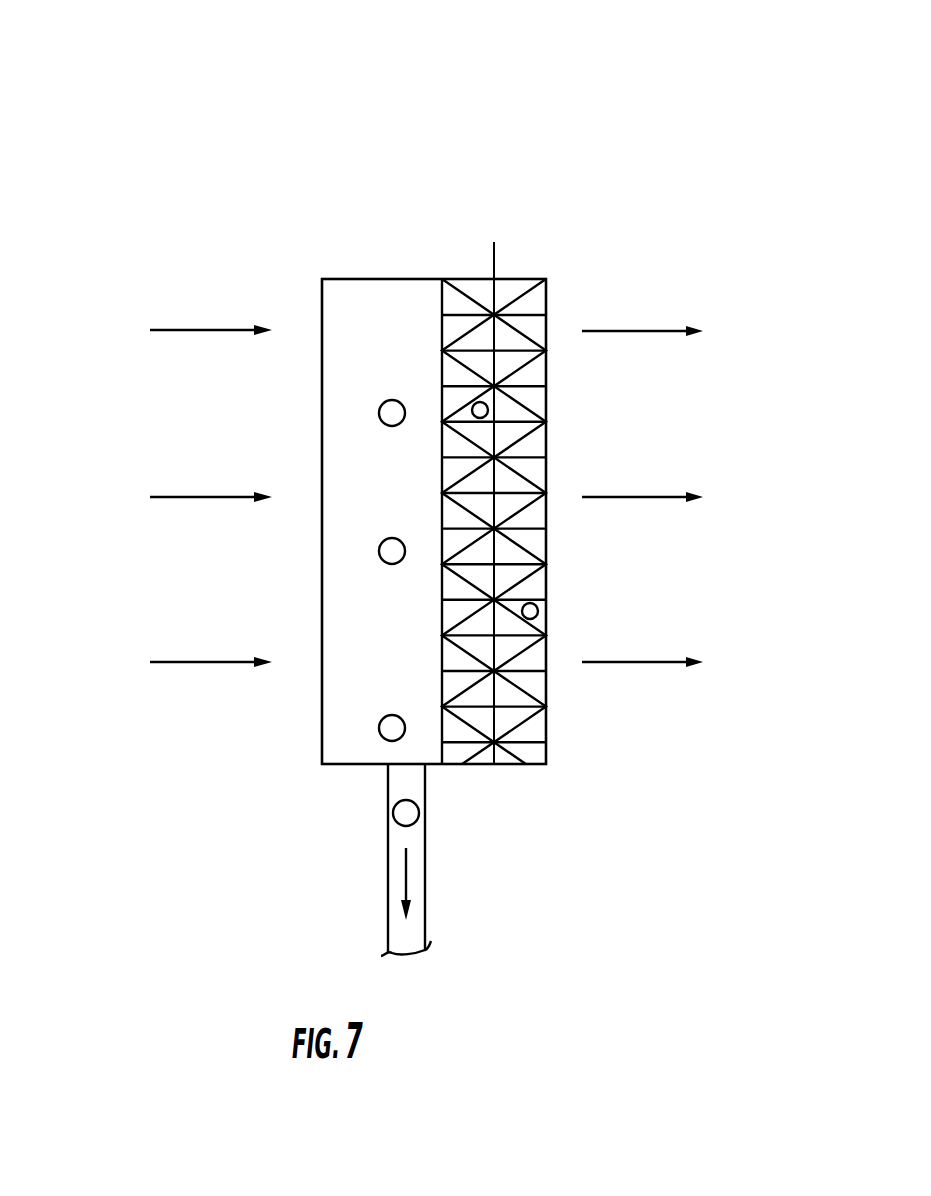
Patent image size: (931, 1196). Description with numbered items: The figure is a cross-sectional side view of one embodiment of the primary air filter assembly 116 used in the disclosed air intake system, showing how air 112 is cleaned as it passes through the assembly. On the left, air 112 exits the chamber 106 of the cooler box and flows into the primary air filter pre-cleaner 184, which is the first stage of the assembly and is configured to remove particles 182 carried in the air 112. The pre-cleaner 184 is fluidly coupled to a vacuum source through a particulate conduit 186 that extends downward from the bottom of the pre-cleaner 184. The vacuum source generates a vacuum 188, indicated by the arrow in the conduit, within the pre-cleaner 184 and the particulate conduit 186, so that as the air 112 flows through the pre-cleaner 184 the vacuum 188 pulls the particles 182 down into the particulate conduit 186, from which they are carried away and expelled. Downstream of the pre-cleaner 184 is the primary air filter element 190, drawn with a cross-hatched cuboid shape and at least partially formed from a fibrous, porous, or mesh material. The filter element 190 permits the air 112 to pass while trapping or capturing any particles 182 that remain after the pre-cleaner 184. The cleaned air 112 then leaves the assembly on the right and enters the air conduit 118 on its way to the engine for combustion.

The primary air filter assembly 116 is at (59, 52).
The chamber 106 is at (92, 549).
The air conduit 118 is at (782, 508).
The air 112 is at (408, 461).
The primary air filter pre-cleaner 184 is at (403, 485).
The primary air filter element 190 is at (504, 478).
The particles 182 is at (489, 519).
The particulate conduit 186 is at (363, 860).
The vacuum 188 is at (452, 884).